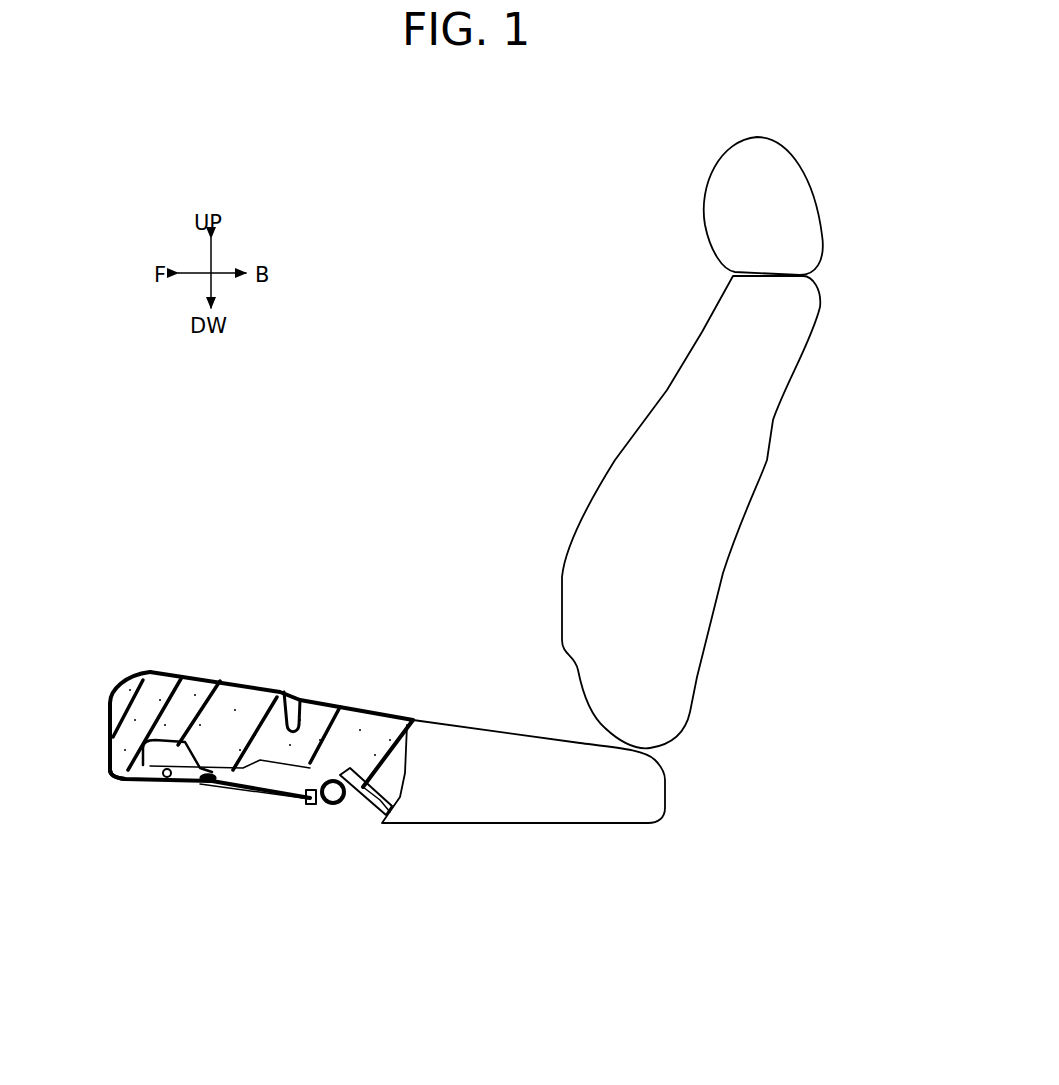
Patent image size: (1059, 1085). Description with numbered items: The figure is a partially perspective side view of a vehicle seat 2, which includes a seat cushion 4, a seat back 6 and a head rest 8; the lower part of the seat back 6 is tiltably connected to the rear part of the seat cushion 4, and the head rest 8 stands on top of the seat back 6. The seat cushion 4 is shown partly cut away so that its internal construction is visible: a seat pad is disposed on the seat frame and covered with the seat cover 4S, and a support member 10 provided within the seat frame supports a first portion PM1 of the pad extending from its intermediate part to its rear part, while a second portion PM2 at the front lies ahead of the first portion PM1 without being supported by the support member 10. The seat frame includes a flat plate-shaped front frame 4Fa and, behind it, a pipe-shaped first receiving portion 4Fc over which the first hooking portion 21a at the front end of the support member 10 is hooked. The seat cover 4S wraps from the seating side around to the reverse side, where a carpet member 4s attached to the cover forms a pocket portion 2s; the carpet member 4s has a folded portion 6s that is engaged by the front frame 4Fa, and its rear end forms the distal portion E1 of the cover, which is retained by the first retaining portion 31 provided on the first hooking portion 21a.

The vehicle seat 2 is at (463, 243).
The head rest 8 is at (693, 188).
The seat back 6 is at (662, 380).
The seat cushion 4 is at (265, 640).
The seat cover 4S is at (176, 671).
The carpet member 4s is at (163, 790).
The folded portion 6s is at (208, 788).
The pocket portion 2s is at (110, 783).
The front frame 4Fa is at (240, 782).
The first receiving portion 4Fc is at (342, 814).
The first retaining portion 31 is at (312, 802).
The distal portion E1 is at (318, 812).
The support member 10 is at (374, 814).
The first hooking portion 21a is at (309, 757).
The second portion PM2 is at (323, 717).
The first portion PM1 is at (382, 732).